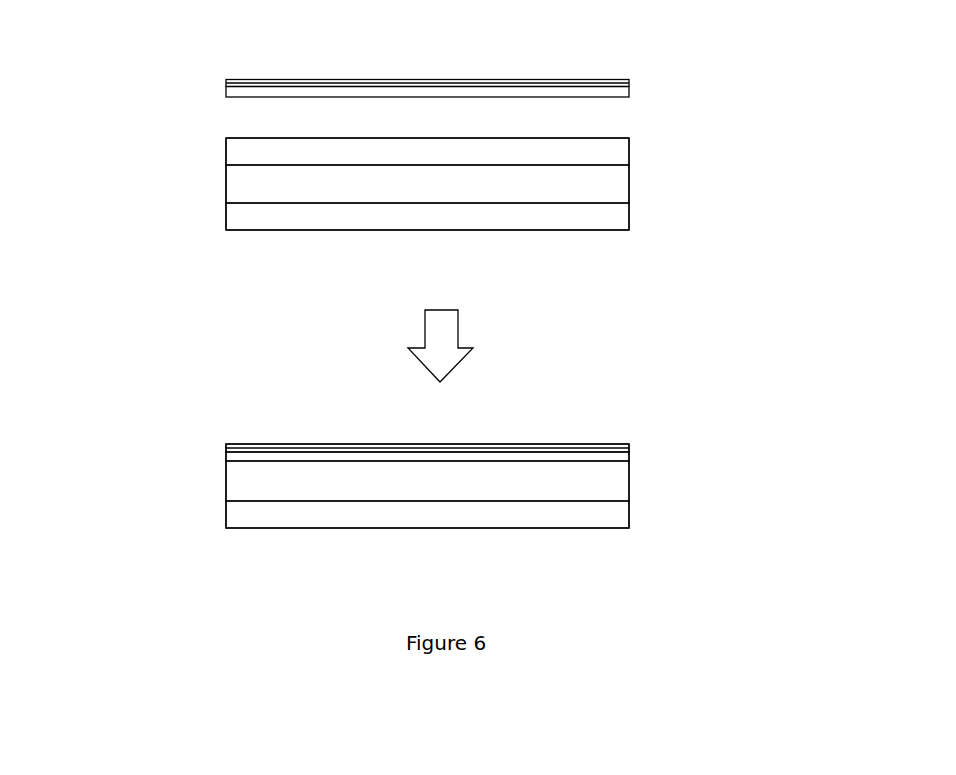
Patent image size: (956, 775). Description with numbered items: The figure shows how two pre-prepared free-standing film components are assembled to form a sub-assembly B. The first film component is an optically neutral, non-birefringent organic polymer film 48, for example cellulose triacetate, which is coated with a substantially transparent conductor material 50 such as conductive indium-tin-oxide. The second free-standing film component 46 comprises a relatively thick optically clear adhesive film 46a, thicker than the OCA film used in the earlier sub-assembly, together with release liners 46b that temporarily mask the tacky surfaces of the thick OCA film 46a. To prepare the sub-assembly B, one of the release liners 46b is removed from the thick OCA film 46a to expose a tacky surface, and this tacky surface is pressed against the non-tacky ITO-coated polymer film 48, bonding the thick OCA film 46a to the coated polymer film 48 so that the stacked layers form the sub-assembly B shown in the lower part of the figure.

The conductor material 50 is at (595, 80).
The organic polymer film 48 is at (622, 92).
The free-standing film component 46 is at (215, 138).
The thick OCA film 46a is at (620, 183).
The release liners 46b is at (620, 150).
The sub-assembly B is at (203, 528).